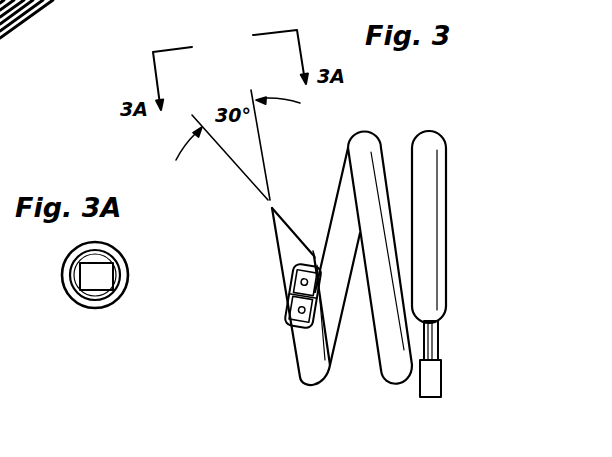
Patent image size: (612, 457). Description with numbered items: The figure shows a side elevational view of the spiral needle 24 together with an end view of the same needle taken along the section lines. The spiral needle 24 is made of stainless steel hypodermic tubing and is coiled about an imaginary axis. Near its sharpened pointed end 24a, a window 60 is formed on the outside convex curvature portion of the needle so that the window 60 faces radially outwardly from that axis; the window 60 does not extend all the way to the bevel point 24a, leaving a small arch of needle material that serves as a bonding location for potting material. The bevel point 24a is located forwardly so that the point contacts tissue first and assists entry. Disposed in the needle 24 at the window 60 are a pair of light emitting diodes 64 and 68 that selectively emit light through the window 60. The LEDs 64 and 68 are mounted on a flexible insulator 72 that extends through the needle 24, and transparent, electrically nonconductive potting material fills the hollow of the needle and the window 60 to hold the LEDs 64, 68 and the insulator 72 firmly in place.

In FIG. 3, the spiral needle 24 is at (448, 178).
In FIG. 3A, the spiral needle 24 is at (125, 290).
In FIG. 3, the pointed end 24a is at (262, 238).
In FIG. 3, the light emitting diode 64 is at (279, 282).
In FIG. 3A, the light emitting diode 64 is at (75, 302).
In FIG. 3, the light emitting diode 68 is at (295, 309).
In FIG. 3, the window 60 is at (290, 322).
In FIG. 3, the flexible insulator 72 is at (438, 368).